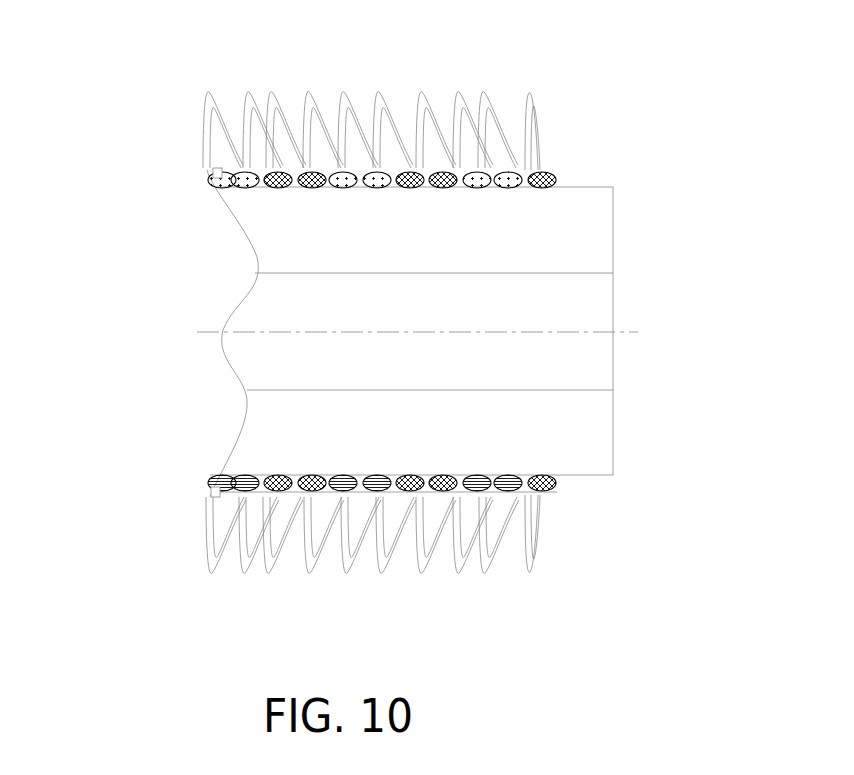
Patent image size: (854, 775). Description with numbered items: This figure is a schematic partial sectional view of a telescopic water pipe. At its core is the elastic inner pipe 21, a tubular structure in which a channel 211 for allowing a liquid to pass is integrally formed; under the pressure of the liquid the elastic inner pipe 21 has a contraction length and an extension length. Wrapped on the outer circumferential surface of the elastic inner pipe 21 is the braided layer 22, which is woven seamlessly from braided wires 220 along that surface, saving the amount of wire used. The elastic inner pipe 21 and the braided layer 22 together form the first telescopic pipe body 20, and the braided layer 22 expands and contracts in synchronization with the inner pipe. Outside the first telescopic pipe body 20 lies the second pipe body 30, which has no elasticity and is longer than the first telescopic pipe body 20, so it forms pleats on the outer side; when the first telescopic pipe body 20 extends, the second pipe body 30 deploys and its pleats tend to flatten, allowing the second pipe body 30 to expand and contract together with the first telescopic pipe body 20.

The first telescopic pipe body 20 is at (545, 77).
The elastic inner pipe 21 is at (290, 228).
The channel 211 is at (275, 310).
The braided layer 22 is at (248, 176).
The braided wires 220 is at (222, 172).
The second pipe body 30 is at (203, 113).